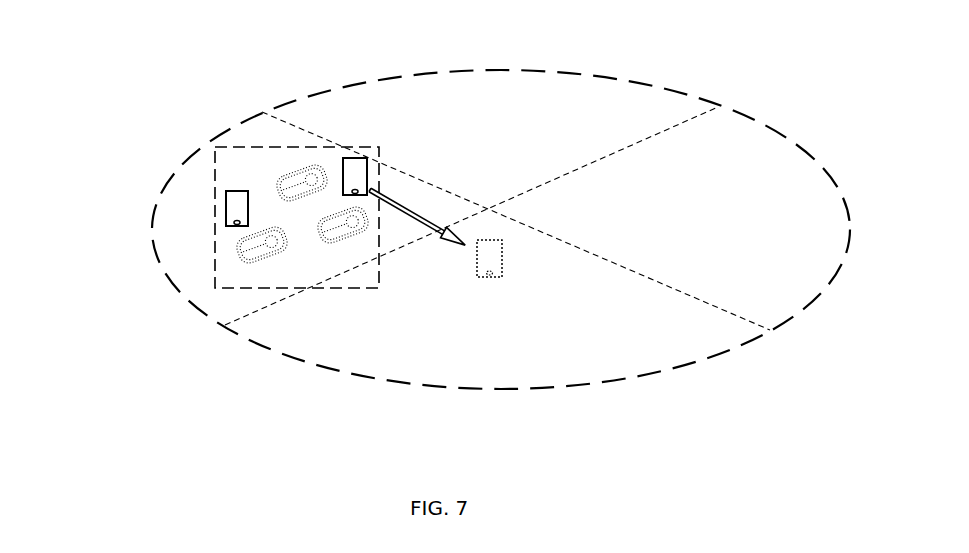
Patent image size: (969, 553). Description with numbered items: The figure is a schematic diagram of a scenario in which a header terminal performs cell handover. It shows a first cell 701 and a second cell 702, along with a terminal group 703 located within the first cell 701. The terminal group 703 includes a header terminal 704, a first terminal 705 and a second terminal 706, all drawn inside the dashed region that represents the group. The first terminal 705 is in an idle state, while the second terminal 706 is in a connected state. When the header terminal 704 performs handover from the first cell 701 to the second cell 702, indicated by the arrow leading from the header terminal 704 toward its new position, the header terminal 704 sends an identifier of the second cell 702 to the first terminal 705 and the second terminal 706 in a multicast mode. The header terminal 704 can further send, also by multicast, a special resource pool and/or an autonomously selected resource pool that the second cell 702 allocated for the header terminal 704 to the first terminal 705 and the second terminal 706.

The first cell 701 is at (183, 200).
The second cell 702 is at (528, 358).
The terminal group 703 is at (270, 147).
The header terminal 704 is at (368, 178).
The first terminal 705 is at (247, 263).
The second terminal 706 is at (225, 228).